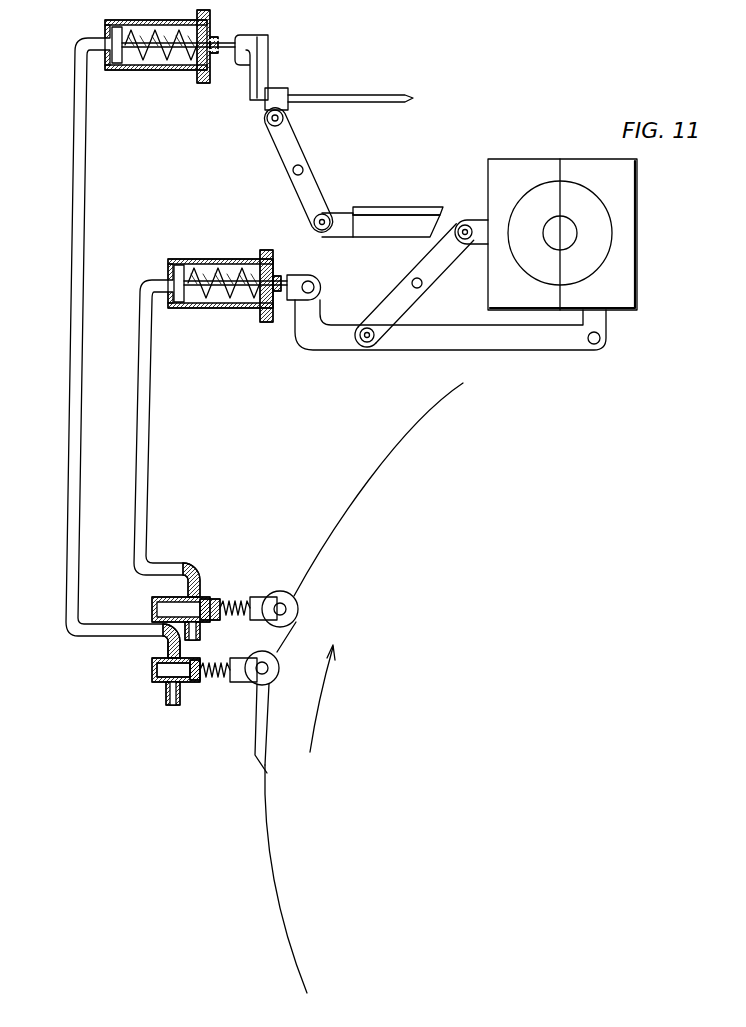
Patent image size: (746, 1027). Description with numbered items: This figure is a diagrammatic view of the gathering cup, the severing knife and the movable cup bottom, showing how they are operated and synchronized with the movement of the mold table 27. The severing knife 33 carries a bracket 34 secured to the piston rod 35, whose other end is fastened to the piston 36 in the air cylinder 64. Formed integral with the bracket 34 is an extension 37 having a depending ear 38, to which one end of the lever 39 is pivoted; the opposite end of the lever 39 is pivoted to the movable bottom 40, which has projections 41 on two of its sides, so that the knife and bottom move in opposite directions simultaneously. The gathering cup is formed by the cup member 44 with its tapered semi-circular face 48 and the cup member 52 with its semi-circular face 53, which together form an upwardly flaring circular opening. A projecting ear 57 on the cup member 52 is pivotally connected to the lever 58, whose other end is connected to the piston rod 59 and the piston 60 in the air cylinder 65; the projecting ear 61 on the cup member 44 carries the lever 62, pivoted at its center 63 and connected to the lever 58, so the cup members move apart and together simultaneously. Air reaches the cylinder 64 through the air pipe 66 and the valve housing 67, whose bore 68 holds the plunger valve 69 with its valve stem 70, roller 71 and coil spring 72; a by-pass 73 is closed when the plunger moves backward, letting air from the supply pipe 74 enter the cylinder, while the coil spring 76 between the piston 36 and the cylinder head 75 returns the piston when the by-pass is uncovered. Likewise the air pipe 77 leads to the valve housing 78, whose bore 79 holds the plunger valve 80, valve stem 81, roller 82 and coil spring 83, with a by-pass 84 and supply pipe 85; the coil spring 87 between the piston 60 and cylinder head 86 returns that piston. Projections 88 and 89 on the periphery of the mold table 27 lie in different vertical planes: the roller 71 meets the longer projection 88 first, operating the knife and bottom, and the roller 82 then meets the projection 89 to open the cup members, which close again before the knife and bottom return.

The mold table 27 is at (383, 518).
The severing knife 33 is at (374, 95).
The bracket 34 is at (268, 57).
The piston rod 35 is at (238, 50).
The piston 36 is at (116, 66).
The extension 37 is at (295, 84).
The depending ear 38 is at (263, 105).
The lever 39 is at (296, 153).
The movable bottom 40 is at (374, 236).
The projections 41 is at (402, 199).
The cup member 44 is at (490, 182).
The tapered semi-circular face 48 is at (528, 270).
The cup member 52 is at (632, 203).
The semi-circular face 53 is at (585, 264).
The projecting ear 57 is at (603, 322).
The lever 58 is at (527, 347).
The piston rod 59 is at (285, 300).
The piston 60 is at (180, 268).
The projecting ear 61 is at (478, 248).
The lever 62 is at (394, 300).
The center pivot 63 is at (421, 286).
The air cylinder 64 is at (105, 25).
The air cylinder 65 is at (202, 308).
The air pipe 66 is at (70, 345).
The valve housing 67 is at (195, 683).
The bore 68 is at (152, 668).
The plunger valve 69 is at (160, 683).
The valve stem 70 is at (224, 655).
The roller 71 is at (279, 673).
The coil spring 72 is at (240, 683).
The by-pass 73 is at (152, 676).
The pipe 74 is at (173, 707).
The cylinder head 75 is at (207, 80).
The coil spring 76 is at (165, 62).
The air pipe 77 is at (150, 412).
The valve housing 78 is at (207, 596).
The bore 79 is at (165, 608).
The plunger valve 80 is at (215, 605).
The valve stem 81 is at (243, 598).
The roller 82 is at (300, 605).
The coil spring 83 is at (240, 614).
The by-pass 84 is at (178, 590).
The pipe 85 is at (172, 639).
The cylinder head 86 is at (274, 263).
The coil spring 87 is at (228, 308).
The projection 88 is at (257, 758).
The projection 89 is at (280, 647).